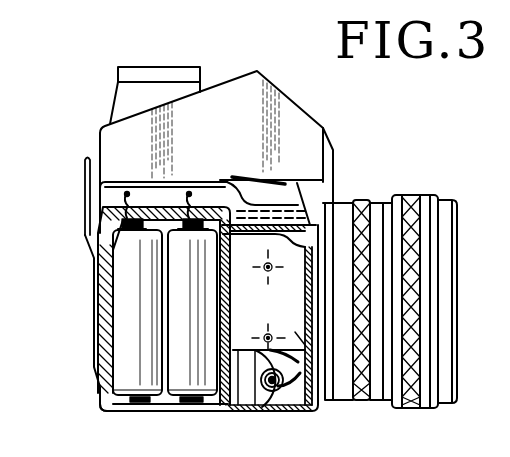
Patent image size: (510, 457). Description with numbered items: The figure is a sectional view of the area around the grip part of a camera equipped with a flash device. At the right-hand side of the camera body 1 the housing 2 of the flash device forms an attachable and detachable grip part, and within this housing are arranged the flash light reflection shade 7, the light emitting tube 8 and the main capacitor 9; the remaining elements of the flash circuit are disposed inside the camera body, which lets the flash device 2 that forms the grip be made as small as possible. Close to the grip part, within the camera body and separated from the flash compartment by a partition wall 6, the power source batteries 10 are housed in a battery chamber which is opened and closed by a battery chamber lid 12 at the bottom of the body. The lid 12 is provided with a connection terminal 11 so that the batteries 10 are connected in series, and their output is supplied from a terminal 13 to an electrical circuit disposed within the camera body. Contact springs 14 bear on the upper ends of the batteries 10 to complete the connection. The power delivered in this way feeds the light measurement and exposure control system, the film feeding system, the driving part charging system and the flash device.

The camera body housing 1 is at (103, 297).
The housing of the flash device 2 is at (177, 438).
The partition wall 6 is at (220, 404).
The flash light reflection shade 7 is at (247, 394).
The light emitting tube 8 is at (276, 392).
The main capacitor 9 is at (318, 352).
The power source batteries 10 is at (207, 388).
The connection terminal 11 is at (160, 406).
The battery chamber lid 12 is at (107, 411).
The terminal 13 is at (125, 231).
The contact spring 14 is at (125, 193).